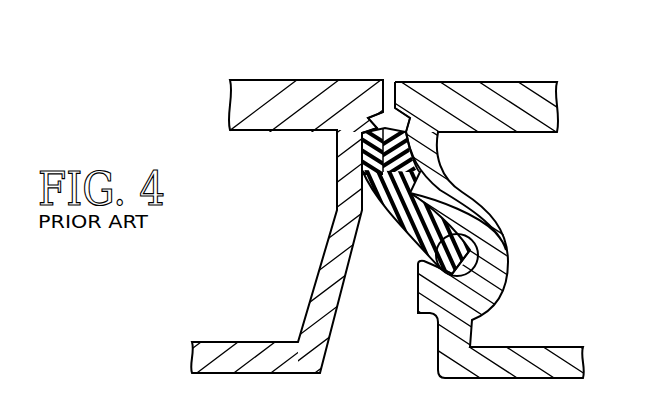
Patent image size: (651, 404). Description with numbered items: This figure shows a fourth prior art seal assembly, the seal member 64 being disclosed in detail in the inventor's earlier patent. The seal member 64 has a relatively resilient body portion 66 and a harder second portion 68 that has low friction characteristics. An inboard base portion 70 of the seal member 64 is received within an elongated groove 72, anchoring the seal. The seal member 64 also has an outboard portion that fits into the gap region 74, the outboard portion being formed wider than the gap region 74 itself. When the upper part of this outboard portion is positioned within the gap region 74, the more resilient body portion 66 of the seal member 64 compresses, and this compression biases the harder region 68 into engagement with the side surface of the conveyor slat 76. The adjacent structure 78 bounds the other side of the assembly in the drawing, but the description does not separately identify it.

The seal member 64 is at (389, 214).
The resilient body portion 66 is at (413, 208).
The harder second portion 68 is at (372, 143).
The inboard base portion 70 is at (466, 252).
The elongated groove 72 is at (420, 253).
The gap region 74 is at (393, 127).
The conveyor slat 76 is at (283, 92).
The second housing member 78 is at (497, 108).